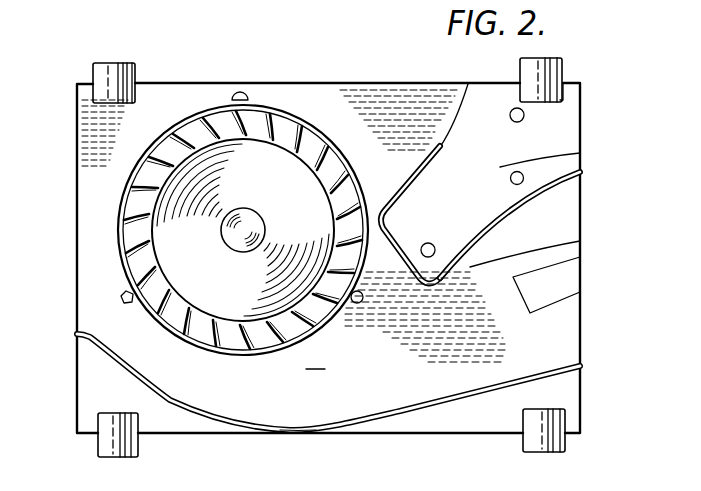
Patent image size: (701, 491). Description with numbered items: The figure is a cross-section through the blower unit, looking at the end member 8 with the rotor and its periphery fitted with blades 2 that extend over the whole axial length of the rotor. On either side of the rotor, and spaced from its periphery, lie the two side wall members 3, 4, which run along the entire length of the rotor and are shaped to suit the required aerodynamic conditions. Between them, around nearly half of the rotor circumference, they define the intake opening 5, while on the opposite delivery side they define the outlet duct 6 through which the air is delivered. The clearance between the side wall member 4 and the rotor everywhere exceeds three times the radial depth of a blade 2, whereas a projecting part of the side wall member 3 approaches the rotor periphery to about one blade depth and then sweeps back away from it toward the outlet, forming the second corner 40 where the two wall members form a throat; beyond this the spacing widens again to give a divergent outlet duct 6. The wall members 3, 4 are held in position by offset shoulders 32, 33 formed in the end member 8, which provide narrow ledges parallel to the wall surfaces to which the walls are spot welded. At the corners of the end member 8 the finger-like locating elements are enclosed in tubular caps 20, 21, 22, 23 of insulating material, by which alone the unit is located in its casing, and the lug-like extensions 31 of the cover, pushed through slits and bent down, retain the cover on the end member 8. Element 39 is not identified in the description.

The blades 2 is at (260, 327).
The side wall member 3 is at (418, 168).
The side wall member 4 is at (530, 372).
The intake opening 5 is at (212, 98).
The outlet duct 6 is at (520, 340).
The end member 8 is at (440, 102).
The tubular cap 20 is at (113, 82).
The tubular cap 21 is at (532, 75).
The tubular cap 22 is at (543, 432).
The tubular cap 23 is at (120, 445).
The extensions 31 is at (245, 88).
The offset shoulder 32 is at (540, 198).
The offset shoulder 33 is at (298, 431).
The guide surface 39 is at (580, 153).
The second corner 40 is at (580, 241).